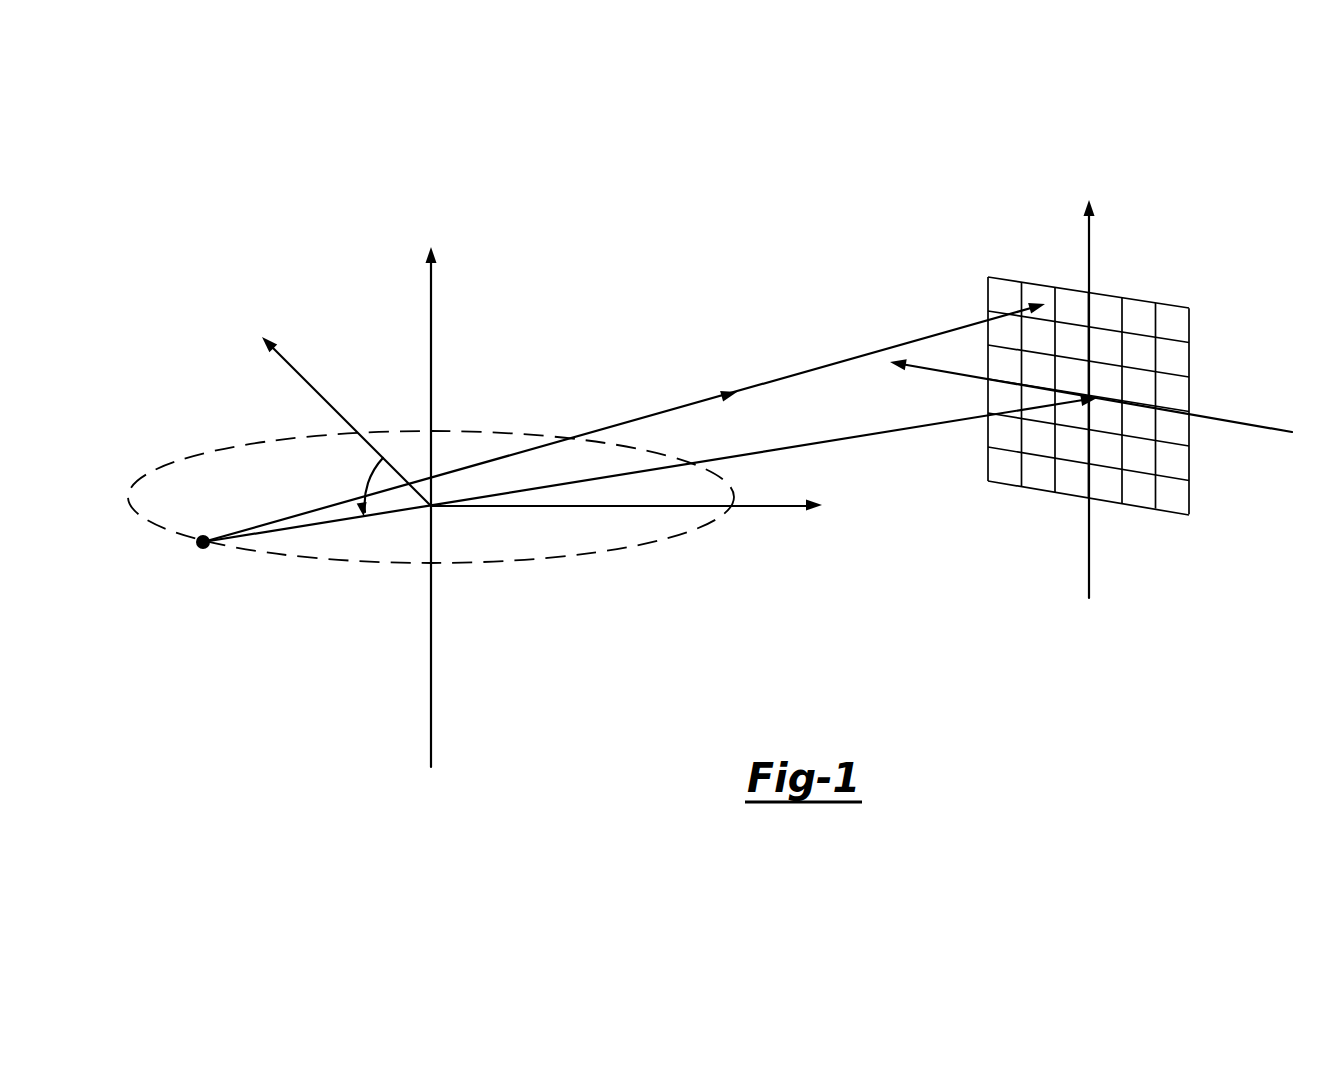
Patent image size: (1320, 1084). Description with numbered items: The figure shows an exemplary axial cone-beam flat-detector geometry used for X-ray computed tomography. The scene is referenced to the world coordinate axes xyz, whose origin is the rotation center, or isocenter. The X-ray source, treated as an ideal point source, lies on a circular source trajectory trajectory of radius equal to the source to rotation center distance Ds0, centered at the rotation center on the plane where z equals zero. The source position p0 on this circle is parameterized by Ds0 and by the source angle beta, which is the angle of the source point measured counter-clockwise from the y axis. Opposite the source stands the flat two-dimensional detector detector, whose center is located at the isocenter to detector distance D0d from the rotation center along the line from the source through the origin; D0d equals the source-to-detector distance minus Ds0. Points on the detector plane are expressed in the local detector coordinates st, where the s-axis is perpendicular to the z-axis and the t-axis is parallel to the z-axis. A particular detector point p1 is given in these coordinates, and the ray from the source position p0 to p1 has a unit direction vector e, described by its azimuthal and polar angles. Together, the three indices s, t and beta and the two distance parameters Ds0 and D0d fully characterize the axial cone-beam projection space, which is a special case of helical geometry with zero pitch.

The coordinate axes xyz is at (535, 507).
The source trajectory is at (431, 515).
The source position p0 is at (209, 503).
The source to rotation center distance Ds0 is at (317, 532).
The isocenter to detector distance D0d is at (764, 450).
The ray direction vector e is at (662, 384).
The detector point p1 is at (1045, 256).
The source angle beta is at (363, 485).
The flat detector is at (1100, 414).
The detector coordinates st is at (1091, 399).